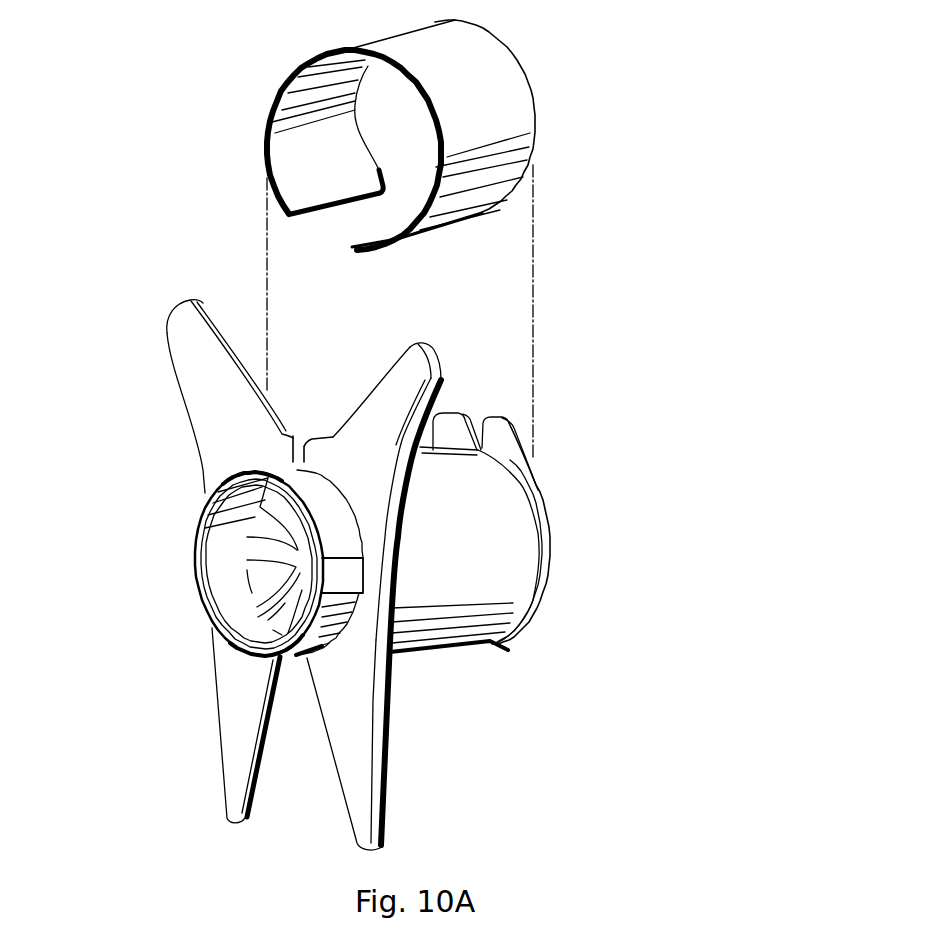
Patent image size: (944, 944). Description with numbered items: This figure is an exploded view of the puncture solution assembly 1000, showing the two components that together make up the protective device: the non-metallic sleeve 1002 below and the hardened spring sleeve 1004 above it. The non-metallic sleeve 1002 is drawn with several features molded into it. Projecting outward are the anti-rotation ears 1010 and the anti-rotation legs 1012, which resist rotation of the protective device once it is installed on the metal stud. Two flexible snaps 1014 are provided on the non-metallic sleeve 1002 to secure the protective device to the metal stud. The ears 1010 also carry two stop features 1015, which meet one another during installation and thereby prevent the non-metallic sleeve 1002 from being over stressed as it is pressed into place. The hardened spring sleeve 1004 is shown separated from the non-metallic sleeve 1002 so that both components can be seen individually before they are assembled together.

The fan assembly 1000 is at (120, 102).
The non-metallic sleeve 1002 is at (372, 537).
The hardened spring sleeve 1004 is at (512, 99).
The anti-rotation ears 1010 is at (413, 399).
The anti-rotation legs 1012 is at (338, 712).
The flexible snaps 1014 is at (350, 587).
The stop features 1015 is at (313, 450).